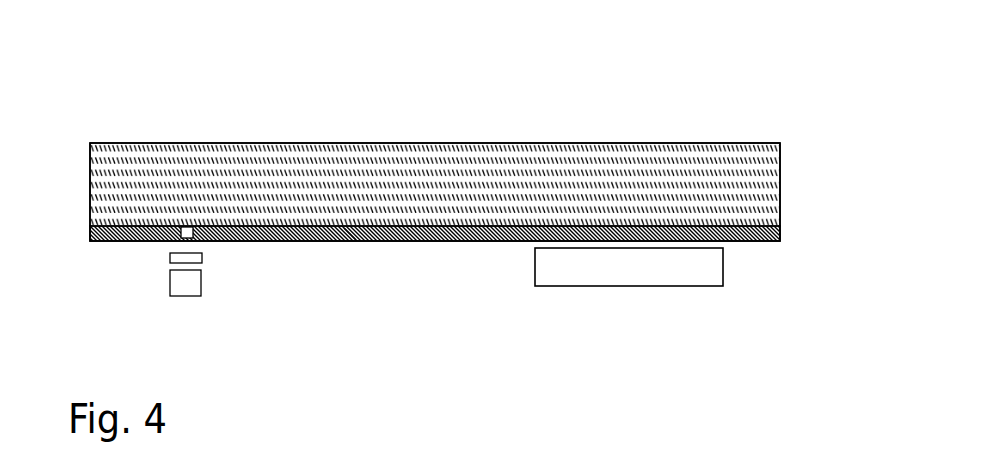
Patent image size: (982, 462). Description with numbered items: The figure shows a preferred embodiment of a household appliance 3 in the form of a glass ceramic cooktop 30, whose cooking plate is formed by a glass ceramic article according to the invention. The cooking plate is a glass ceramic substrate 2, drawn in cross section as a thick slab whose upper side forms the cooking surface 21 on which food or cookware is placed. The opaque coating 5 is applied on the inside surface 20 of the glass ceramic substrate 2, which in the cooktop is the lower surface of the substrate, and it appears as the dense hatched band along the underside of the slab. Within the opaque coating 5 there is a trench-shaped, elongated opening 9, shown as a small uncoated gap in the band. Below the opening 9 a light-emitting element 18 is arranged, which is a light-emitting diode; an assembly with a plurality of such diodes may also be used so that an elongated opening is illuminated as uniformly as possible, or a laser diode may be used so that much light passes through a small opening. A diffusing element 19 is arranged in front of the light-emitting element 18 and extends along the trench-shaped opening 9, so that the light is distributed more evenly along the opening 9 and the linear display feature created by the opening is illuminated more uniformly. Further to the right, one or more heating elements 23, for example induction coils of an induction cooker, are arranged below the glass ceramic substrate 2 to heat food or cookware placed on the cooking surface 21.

The glass ceramic substrate 2 is at (461, 183).
The household appliance 3 is at (435, 157).
The glass ceramic cooktop 30 is at (435, 192).
The inside surface 20 is at (448, 144).
The opaque coating 5 is at (289, 241).
The cooking surface 21 is at (350, 232).
The opening 9 is at (183, 233).
The light-emitting element 18 is at (192, 296).
The diffusing element 19 is at (202, 258).
The heating element 23 is at (582, 286).